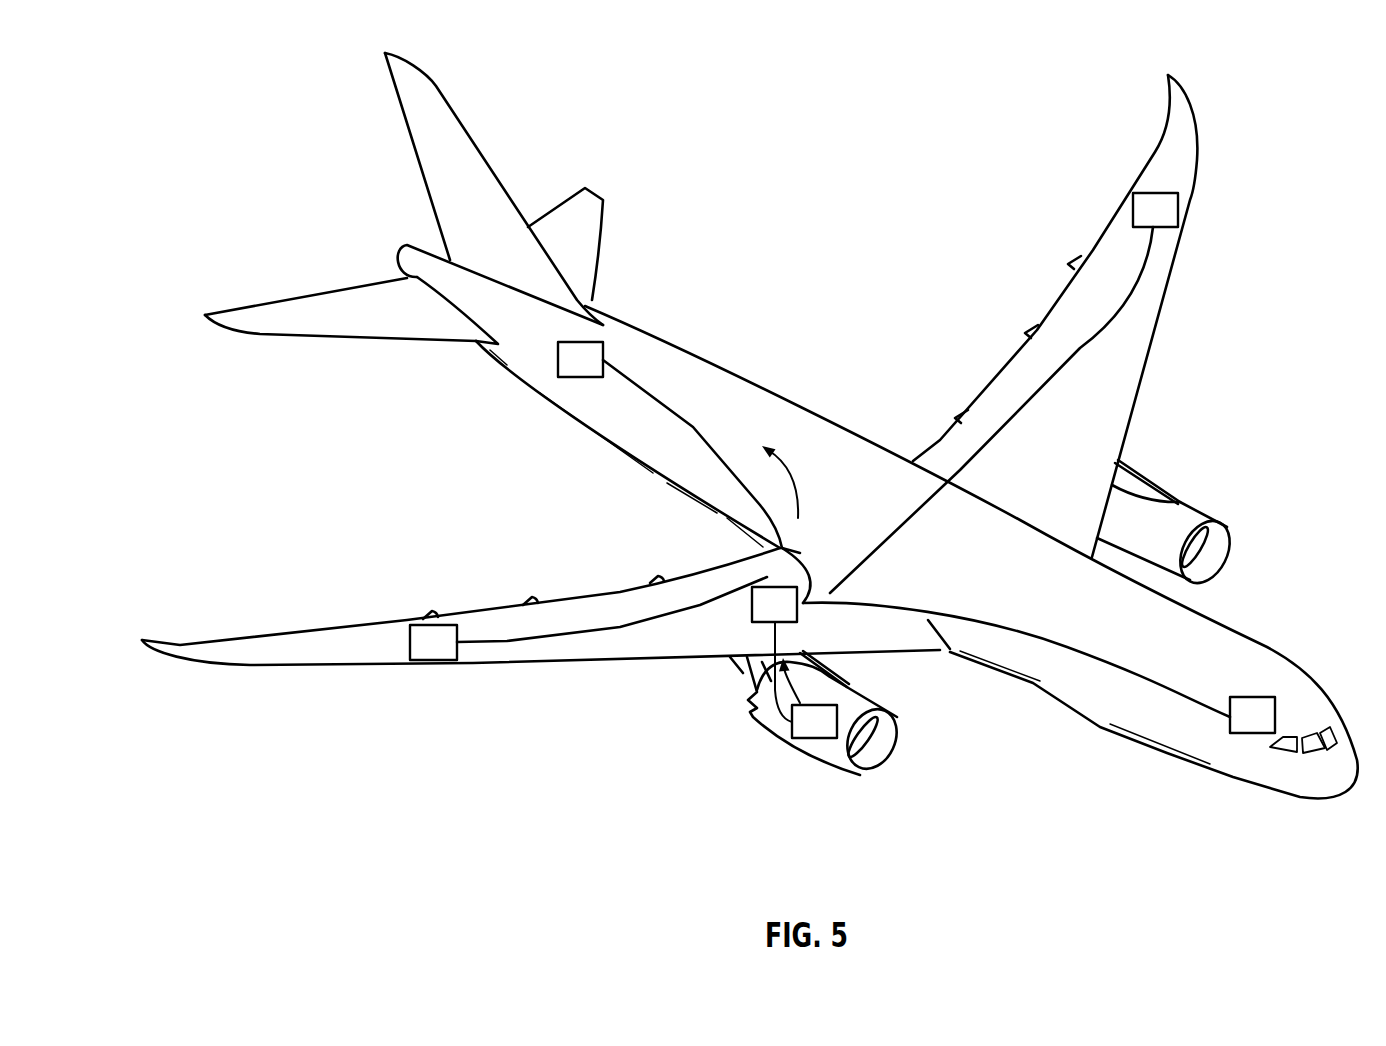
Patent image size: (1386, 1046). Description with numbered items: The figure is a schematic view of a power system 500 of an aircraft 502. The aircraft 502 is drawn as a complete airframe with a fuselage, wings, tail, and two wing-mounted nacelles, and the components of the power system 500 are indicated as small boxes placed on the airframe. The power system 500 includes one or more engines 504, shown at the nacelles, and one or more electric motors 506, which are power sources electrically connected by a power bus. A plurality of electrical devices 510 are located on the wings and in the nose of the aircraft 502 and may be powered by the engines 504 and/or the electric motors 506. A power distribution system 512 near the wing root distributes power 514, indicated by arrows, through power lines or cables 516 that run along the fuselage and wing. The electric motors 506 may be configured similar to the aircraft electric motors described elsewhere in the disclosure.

The power system 500 is at (295, 825).
The aircraft 502 is at (1060, 690).
The engine 504 is at (843, 775).
The electric motor 506 is at (580, 377).
The electrical device 510 is at (442, 625).
The power distribution system 512 is at (750, 607).
The power 514 is at (793, 482).
The power line or cable 516 is at (697, 433).